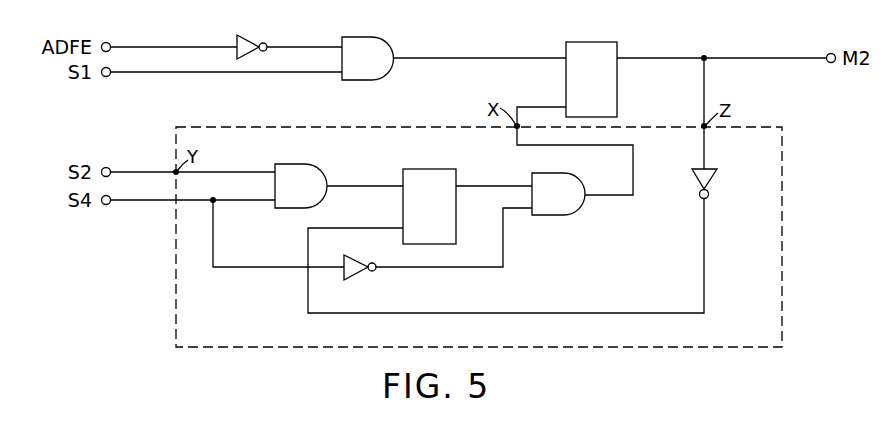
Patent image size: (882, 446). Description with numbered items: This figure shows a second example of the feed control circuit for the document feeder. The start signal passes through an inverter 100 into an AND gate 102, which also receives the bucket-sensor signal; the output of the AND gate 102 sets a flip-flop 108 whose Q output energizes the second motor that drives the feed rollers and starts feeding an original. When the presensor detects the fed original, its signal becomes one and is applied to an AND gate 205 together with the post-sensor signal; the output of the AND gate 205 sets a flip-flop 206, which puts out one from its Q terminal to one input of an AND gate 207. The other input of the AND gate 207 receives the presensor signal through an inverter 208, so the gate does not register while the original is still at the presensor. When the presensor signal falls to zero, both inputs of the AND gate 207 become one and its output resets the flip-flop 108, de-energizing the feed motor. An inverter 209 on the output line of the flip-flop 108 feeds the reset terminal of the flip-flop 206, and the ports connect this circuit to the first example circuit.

The inverter 100 is at (252, 38).
The AND gate 102 is at (366, 37).
The flip-flop 108 is at (597, 42).
The AND gate 205 is at (300, 164).
The flip-flop 206 is at (437, 169).
The AND gate 207 is at (555, 216).
The inverter 208 is at (358, 277).
The inverter 209 is at (712, 177).